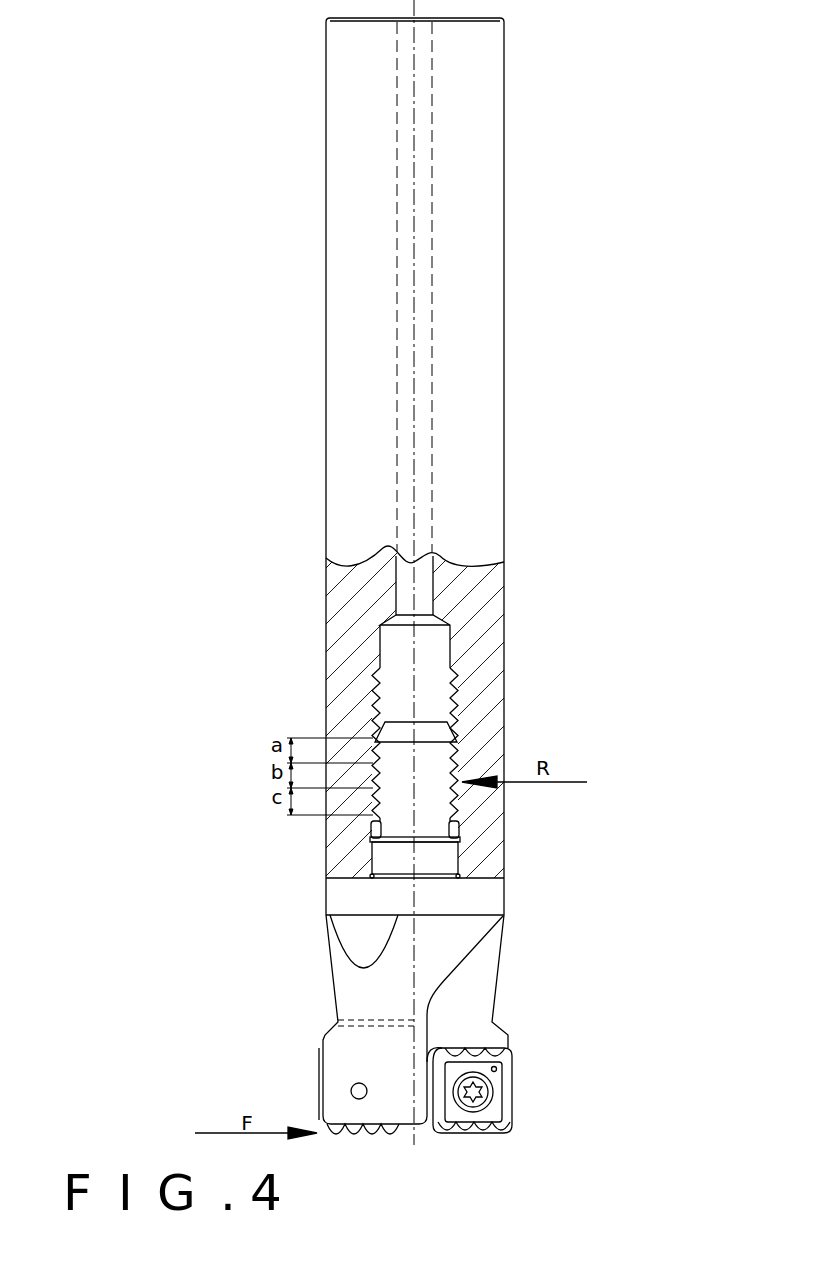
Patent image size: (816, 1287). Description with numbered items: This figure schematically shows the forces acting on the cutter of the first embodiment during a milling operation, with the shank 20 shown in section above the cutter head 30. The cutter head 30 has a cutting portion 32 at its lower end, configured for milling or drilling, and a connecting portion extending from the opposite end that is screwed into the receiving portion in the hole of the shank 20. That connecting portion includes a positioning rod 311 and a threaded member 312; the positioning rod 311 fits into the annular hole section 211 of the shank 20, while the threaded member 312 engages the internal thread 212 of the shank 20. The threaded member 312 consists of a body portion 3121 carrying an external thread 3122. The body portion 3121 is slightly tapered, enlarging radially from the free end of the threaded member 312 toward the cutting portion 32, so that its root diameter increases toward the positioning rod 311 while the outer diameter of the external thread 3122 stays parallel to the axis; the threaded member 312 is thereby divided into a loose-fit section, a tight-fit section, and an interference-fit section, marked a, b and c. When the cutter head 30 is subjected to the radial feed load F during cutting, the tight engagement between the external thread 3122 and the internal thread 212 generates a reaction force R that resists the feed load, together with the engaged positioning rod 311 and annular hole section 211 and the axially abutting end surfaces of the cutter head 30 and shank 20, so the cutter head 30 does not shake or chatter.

The shank 20 is at (485, 295).
The annular hole section 211 is at (370, 856).
The internal thread 212 is at (457, 690).
The cutter head 30 is at (350, 1000).
The positioning rod 311 is at (430, 857).
The threaded member 312 is at (627, 840).
The body portion 3121 is at (420, 805).
The external thread 3122 is at (455, 795).
The cutting portion 32 is at (508, 1089).